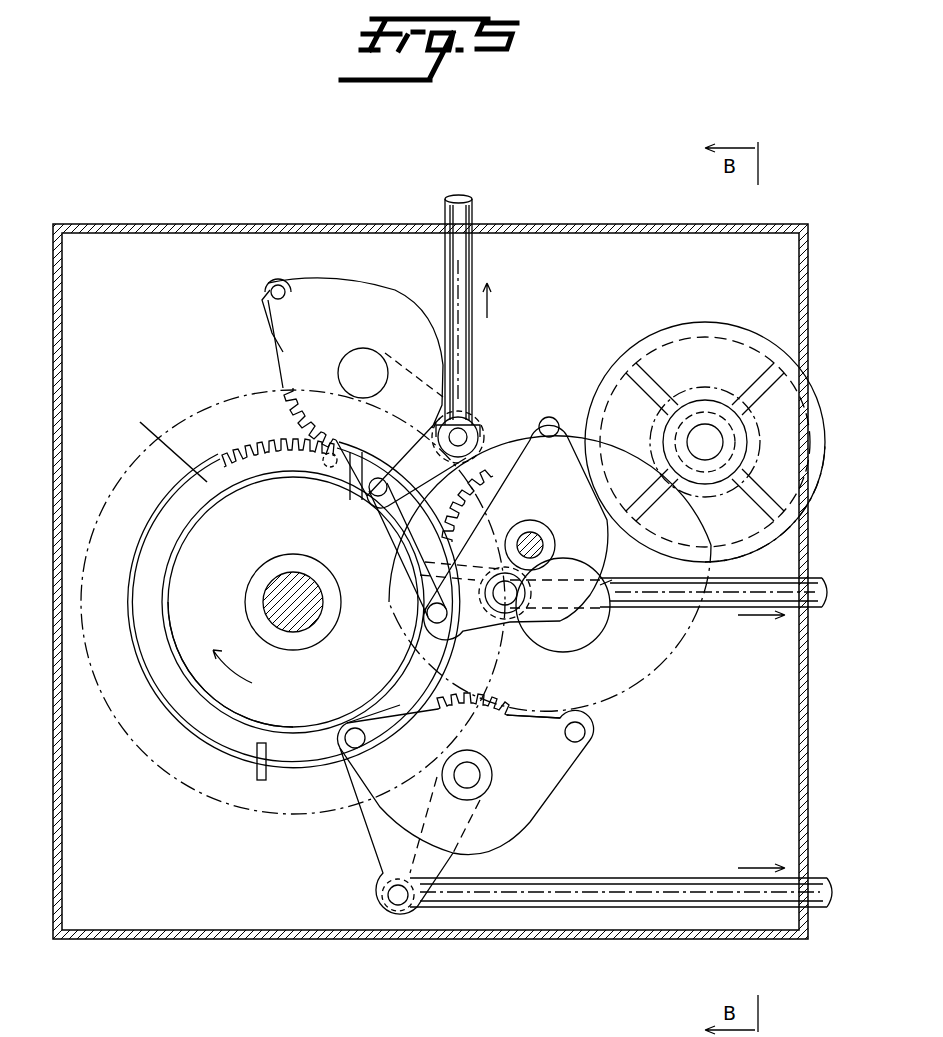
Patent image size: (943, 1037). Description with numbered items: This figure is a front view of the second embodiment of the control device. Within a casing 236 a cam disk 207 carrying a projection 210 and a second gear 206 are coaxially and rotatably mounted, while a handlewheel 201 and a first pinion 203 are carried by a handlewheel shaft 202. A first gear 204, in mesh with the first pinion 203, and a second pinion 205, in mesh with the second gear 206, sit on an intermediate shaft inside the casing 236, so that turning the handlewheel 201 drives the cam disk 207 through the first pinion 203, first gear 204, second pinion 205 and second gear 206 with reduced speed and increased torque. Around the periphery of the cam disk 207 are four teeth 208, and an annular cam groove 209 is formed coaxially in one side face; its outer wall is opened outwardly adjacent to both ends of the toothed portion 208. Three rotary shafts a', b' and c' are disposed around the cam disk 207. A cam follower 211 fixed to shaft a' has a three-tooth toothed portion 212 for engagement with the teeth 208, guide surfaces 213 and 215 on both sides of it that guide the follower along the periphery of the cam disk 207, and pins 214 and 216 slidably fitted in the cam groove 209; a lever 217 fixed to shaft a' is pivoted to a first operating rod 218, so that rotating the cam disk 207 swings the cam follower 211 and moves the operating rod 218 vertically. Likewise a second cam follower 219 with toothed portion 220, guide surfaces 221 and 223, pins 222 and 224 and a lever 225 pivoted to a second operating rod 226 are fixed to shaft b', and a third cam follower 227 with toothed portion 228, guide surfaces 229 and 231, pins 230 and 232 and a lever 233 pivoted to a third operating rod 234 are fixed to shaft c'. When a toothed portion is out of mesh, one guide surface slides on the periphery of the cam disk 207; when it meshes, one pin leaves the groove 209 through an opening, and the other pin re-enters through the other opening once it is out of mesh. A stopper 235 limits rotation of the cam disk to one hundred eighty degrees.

The handlewheel 201 is at (818, 398).
The handlewheel shaft 202 is at (792, 502).
The first pinion 203 is at (688, 385).
The first gear 204 is at (710, 672).
The second pinion 205 is at (598, 650).
The second gear 206 is at (158, 400).
The cam disk 207 is at (160, 712).
The teeth 208 is at (222, 430).
The annular cam groove 209 is at (222, 745).
The projection 210 is at (330, 470).
The cam follower 211 is at (364, 303).
The toothed portion 212 is at (280, 385).
The guide surface 213 is at (352, 502).
The pin 214 is at (380, 498).
The guide surface 215 is at (272, 335).
The pin 216 is at (279, 285).
The lever 217 is at (465, 412).
The first operating rod 218 is at (468, 210).
The second cam follower 219 is at (615, 590).
The toothed portion 220 is at (470, 430).
The guide surface 221 is at (397, 609).
The pin 222 is at (428, 618).
The guide surface 223 is at (532, 435).
The pin 224 is at (551, 416).
The lever 225 is at (407, 574).
The second operating rod 226 is at (680, 607).
The third cam follower 227 is at (543, 830).
The toothed portion 228 is at (468, 693).
The guide surface 229 is at (405, 715).
The pin 230 is at (345, 750).
The guide surface 231 is at (540, 738).
The pin 232 is at (587, 731).
The lever 233 is at (380, 876).
The third operating rod 234 is at (690, 878).
The stopper 235 is at (262, 782).
The casing 236 is at (208, 222).
The rotary shaft a is at (370, 362).
The rotary shaft b is at (556, 545).
The rotary shaft c is at (475, 778).